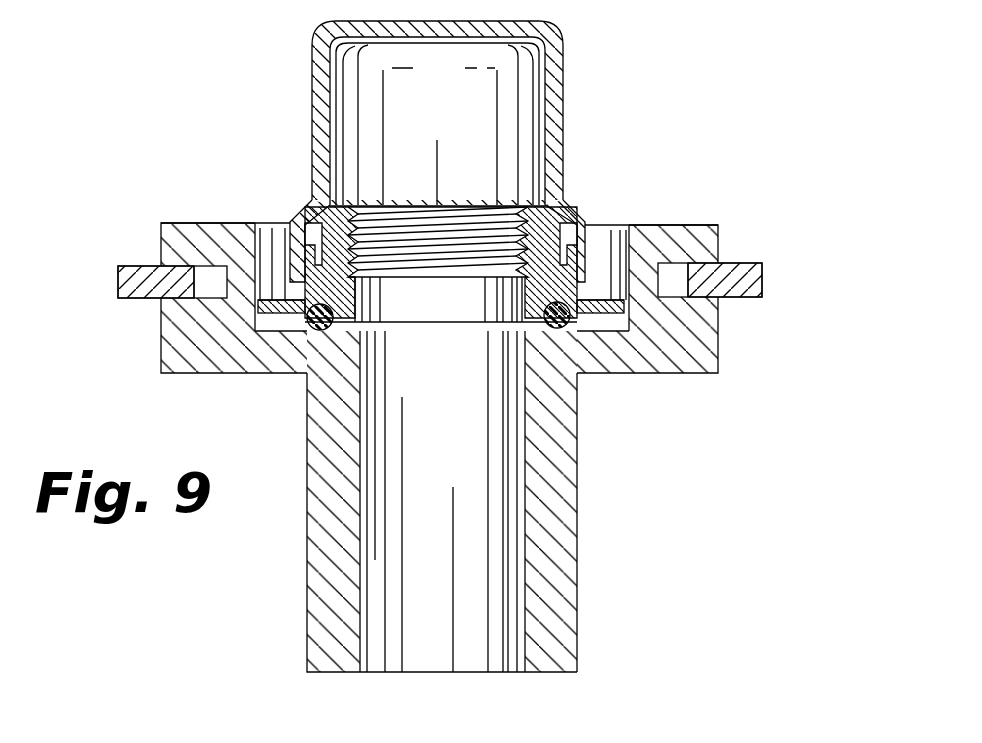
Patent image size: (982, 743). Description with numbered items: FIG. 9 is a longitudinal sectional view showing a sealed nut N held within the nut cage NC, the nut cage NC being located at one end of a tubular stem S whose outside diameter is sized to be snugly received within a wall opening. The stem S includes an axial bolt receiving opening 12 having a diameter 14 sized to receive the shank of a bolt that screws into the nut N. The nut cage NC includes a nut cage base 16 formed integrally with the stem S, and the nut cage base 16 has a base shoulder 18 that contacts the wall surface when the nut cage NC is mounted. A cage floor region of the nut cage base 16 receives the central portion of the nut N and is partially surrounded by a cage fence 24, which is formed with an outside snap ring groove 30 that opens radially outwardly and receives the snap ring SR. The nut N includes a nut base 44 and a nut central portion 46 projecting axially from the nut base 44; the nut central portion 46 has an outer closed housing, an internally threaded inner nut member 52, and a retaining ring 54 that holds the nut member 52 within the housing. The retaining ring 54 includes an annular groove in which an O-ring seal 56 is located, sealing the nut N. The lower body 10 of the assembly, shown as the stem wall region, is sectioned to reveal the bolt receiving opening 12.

The stem 10 is at (578, 600).
The bolt receiving opening 12 is at (470, 439).
The diameter 14 is at (362, 546).
The nut cage base 16 is at (178, 346).
The base shoulder 18 is at (666, 375).
The cage fence 24 is at (196, 232).
The snap ring groove 30 is at (184, 272).
The nut base 44 is at (278, 226).
The nut central portion 46 is at (316, 103).
The internally threaded inner nut member 52 is at (487, 222).
The retaining ring 54 is at (408, 300).
The O-ring seal 56 is at (290, 333).
The nut N is at (580, 96).
The nut cage NC is at (682, 198).
The stem S is at (586, 503).
The snap ring SR is at (762, 282).